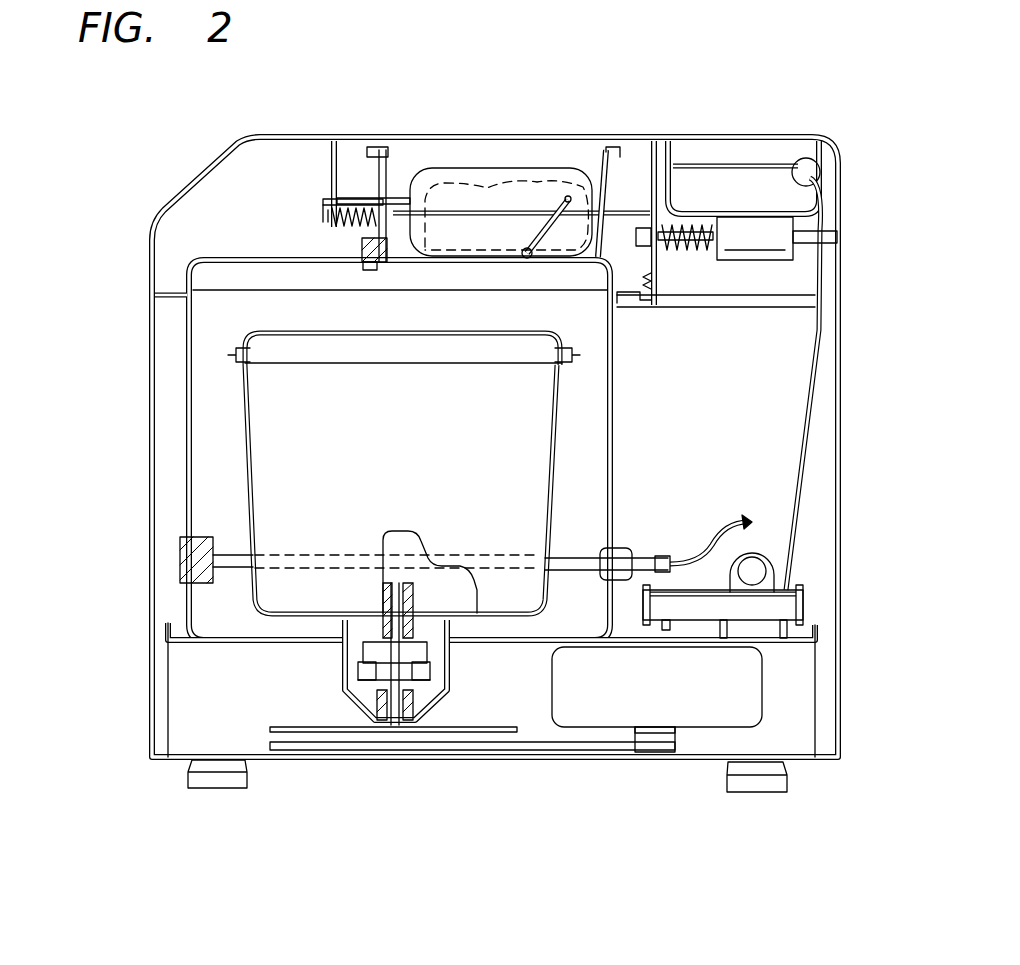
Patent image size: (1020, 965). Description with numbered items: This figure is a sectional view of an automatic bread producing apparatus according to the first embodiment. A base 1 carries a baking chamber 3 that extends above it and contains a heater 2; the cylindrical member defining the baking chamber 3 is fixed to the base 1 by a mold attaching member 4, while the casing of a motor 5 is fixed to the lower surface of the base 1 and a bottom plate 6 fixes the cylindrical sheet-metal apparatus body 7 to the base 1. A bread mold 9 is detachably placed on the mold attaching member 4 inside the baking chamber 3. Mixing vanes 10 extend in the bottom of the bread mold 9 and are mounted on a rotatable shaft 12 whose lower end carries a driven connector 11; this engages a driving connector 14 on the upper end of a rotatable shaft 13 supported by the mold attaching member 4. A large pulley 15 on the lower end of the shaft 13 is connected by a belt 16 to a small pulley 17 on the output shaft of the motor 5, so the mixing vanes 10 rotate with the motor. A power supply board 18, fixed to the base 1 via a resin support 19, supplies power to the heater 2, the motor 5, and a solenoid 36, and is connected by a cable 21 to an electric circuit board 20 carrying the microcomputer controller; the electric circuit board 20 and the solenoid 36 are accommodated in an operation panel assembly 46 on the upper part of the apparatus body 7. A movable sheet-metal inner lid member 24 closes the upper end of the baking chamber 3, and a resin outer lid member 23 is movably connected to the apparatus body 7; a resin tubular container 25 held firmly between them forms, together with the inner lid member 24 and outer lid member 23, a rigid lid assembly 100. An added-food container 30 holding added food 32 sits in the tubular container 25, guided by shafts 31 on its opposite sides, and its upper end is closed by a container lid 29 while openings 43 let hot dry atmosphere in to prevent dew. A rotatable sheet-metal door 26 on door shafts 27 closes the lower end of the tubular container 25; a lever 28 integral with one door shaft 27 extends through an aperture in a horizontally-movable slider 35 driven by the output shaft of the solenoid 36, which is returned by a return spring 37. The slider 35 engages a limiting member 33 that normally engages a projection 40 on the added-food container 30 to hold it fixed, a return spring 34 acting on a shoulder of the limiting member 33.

The lid assembly 100 is at (470, 435).
The base 1 is at (817, 682).
The heater 2 is at (648, 560).
The baking chamber 3 is at (187, 418).
The mold attaching member 4 is at (462, 648).
The motor 5 is at (755, 707).
The bottom plate 6 is at (695, 760).
The apparatus body 7 is at (843, 425).
The bread mold 9 is at (243, 470).
The mixing vanes 10 is at (383, 535).
The driven connector 11 is at (363, 705).
The rotatable shaft 12 is at (385, 602).
The rotatable shaft 13 is at (395, 728).
The driving connector 14 is at (425, 690).
The large pulley 15 is at (290, 757).
The belt 16 is at (545, 748).
The small pulley 17 is at (640, 752).
The power supply board 18 is at (784, 585).
The support 19 is at (805, 602).
The electric circuit board 20 is at (823, 180).
The cable 21 is at (823, 373).
The outer lid member 23 is at (192, 172).
The inner lid member 24 is at (228, 255).
The tubular container 25 is at (388, 165).
The door 26 is at (410, 265).
The door shafts 27 is at (527, 262).
The lever 28 is at (590, 168).
The container lid 29 is at (518, 139).
The added-food container 30 is at (462, 167).
The shafts 31 is at (530, 250).
The added food 32 is at (490, 188).
The limiting member 33 is at (372, 210).
The return spring 34 is at (330, 198).
The slider 35 is at (619, 212).
The solenoid 36 is at (740, 216).
The return spring 37 is at (683, 230).
The projection 40 is at (414, 190).
The openings 43 is at (379, 148).
The operation panel assembly 46 is at (784, 140).